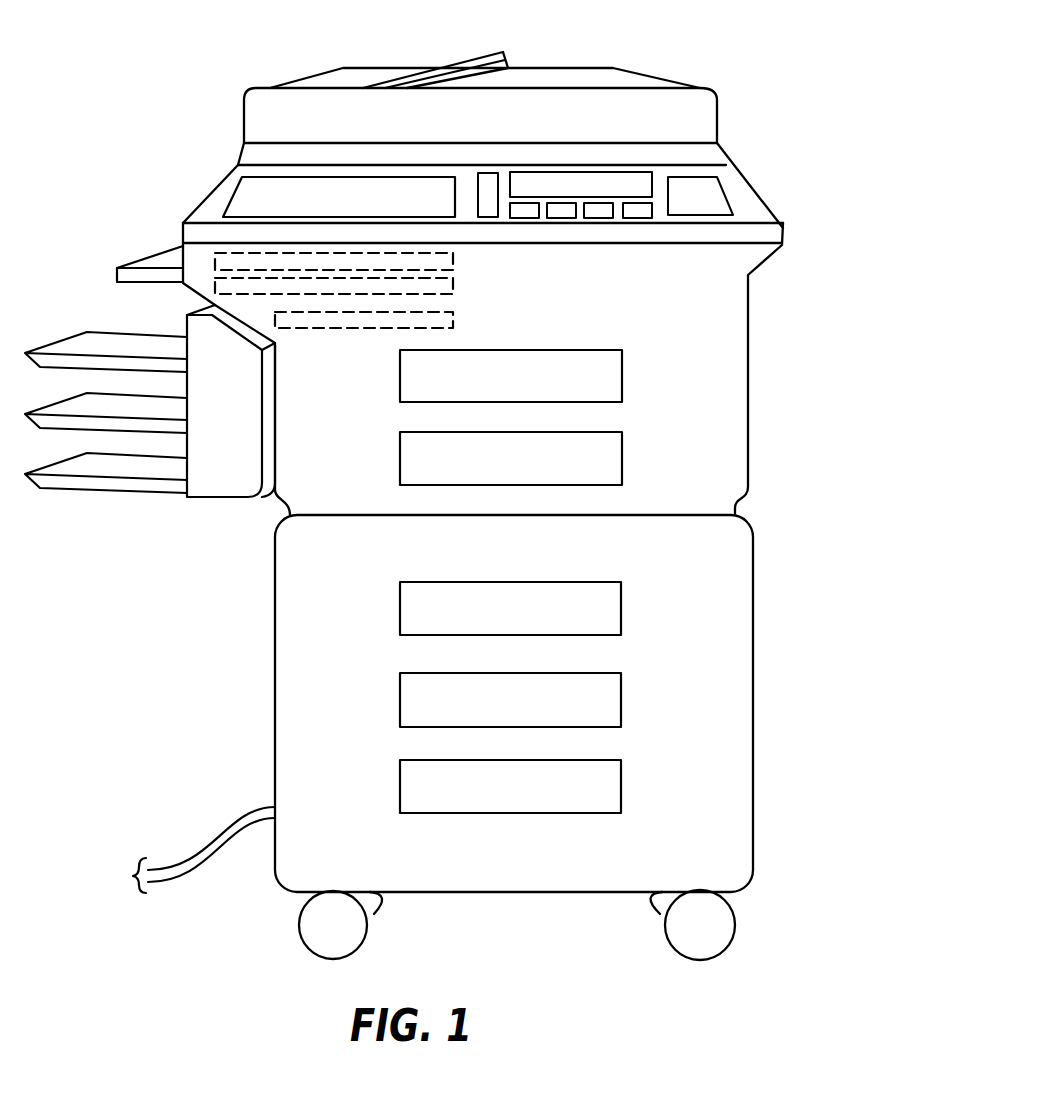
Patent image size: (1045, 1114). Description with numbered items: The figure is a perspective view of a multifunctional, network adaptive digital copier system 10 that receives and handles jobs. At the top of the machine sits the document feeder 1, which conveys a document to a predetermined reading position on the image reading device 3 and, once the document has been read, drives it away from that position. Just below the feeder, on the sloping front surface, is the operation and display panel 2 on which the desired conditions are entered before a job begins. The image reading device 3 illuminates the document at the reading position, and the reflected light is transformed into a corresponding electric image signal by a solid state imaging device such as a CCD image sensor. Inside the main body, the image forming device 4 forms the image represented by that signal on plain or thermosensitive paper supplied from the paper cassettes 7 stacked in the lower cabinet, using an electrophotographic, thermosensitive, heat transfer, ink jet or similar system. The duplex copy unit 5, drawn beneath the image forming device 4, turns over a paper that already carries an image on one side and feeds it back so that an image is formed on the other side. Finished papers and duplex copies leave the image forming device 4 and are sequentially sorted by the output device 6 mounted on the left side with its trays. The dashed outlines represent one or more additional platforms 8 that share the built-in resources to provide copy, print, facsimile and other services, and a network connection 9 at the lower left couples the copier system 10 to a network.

The digital copier system 10 is at (648, 38).
The document feeder 1 is at (703, 103).
The operation and display panel 2 is at (256, 176).
The image reading device 3 is at (198, 178).
The image forming device 4 is at (622, 355).
The duplex copy unit 5 is at (622, 457).
The output device 6 is at (118, 512).
The paper cassettes 7 is at (621, 600).
The additional platforms 8 is at (492, 288).
The network connection 9 is at (202, 838).